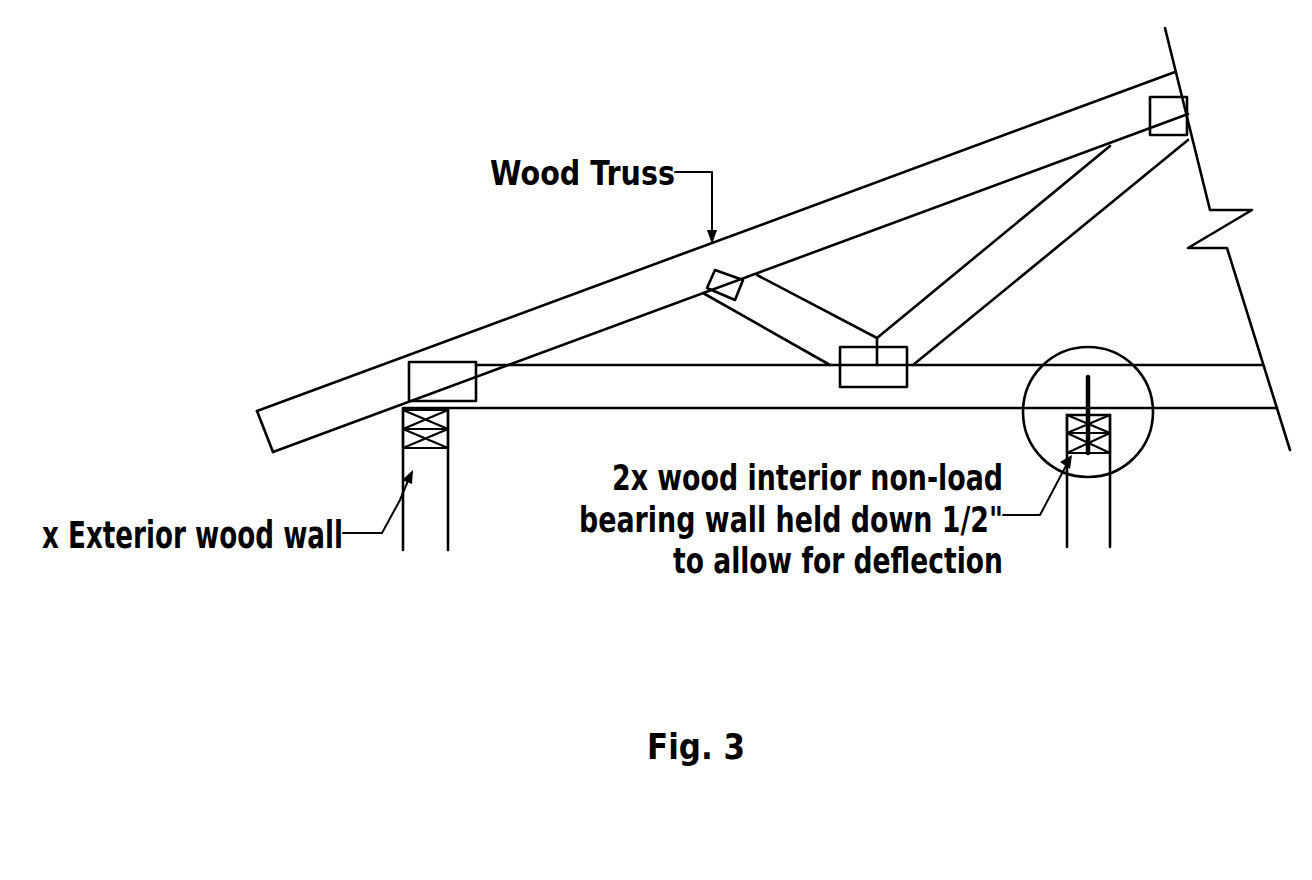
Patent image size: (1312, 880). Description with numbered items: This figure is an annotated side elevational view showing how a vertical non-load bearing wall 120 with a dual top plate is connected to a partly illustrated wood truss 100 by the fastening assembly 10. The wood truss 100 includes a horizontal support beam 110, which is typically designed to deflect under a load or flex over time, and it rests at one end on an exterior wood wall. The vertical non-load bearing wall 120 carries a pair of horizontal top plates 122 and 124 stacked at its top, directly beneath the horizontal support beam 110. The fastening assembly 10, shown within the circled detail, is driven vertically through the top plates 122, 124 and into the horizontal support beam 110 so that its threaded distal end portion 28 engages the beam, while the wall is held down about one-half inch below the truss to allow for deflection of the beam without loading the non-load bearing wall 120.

The wood truss 100 is at (573, 293).
The horizontal support beam 110 is at (538, 393).
The fastening assembly 10 is at (1082, 393).
The threaded distal end portion 28 is at (1092, 390).
The top plate 122 is at (1110, 415).
The top plate 124 is at (1103, 442).
The non-load bearing wall 120 is at (1095, 500).